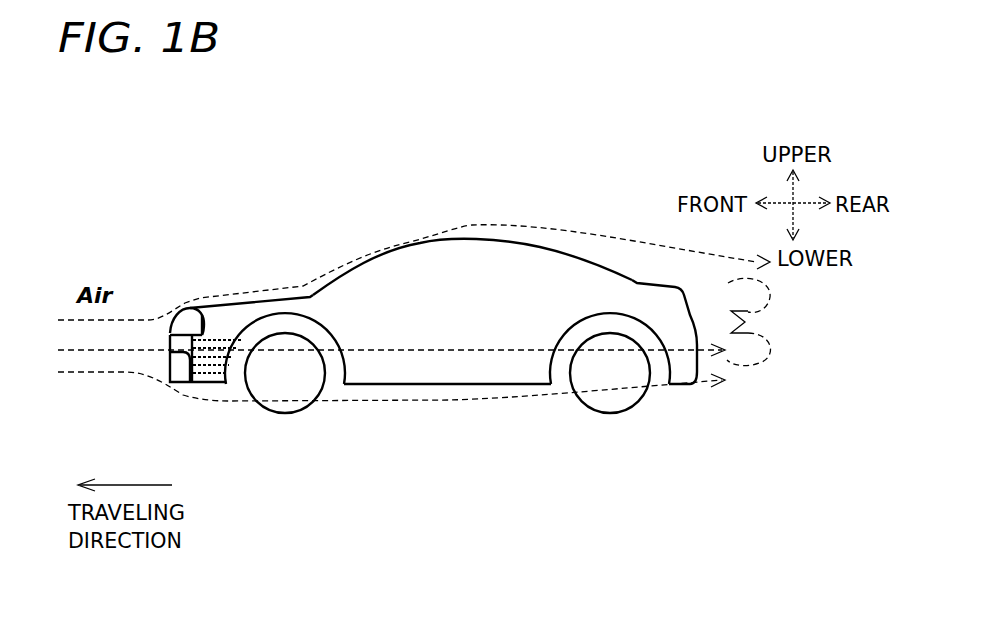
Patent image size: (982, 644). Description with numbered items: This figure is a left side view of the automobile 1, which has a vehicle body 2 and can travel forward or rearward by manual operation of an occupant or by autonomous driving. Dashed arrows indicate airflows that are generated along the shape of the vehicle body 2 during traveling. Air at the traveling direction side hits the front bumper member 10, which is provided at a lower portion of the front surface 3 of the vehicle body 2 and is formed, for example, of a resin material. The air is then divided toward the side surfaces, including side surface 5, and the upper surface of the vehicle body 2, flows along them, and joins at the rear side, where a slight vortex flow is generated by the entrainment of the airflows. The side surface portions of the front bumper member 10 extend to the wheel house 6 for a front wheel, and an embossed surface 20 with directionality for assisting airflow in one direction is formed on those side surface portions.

The automobile 1 is at (562, 205).
The vehicle body 2 is at (463, 235).
The front surface 3 is at (168, 332).
The side surface 5 is at (497, 363).
The wheel house 6 is at (242, 363).
The front bumper member 10 is at (168, 372).
The embossed surface 20 is at (220, 383).